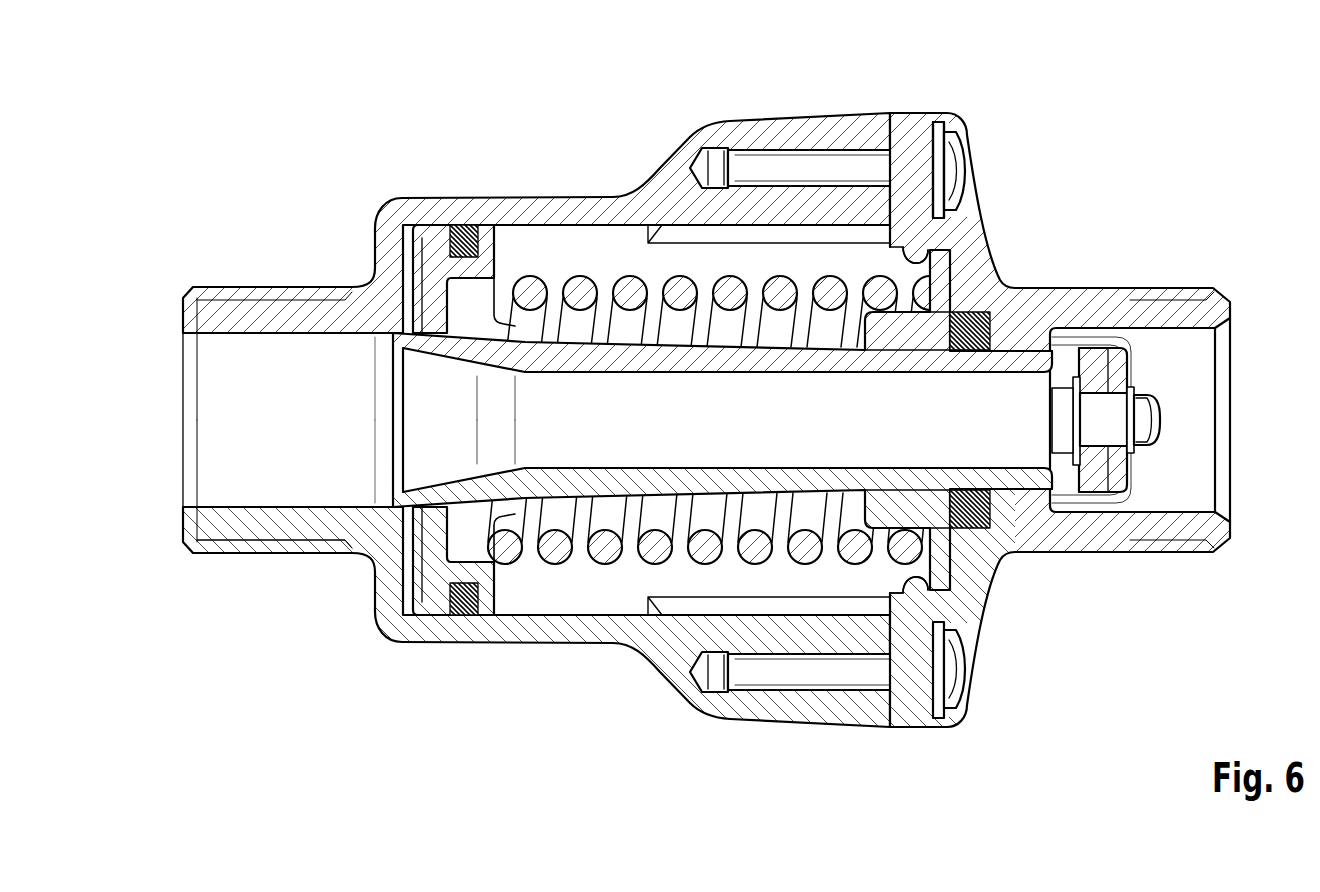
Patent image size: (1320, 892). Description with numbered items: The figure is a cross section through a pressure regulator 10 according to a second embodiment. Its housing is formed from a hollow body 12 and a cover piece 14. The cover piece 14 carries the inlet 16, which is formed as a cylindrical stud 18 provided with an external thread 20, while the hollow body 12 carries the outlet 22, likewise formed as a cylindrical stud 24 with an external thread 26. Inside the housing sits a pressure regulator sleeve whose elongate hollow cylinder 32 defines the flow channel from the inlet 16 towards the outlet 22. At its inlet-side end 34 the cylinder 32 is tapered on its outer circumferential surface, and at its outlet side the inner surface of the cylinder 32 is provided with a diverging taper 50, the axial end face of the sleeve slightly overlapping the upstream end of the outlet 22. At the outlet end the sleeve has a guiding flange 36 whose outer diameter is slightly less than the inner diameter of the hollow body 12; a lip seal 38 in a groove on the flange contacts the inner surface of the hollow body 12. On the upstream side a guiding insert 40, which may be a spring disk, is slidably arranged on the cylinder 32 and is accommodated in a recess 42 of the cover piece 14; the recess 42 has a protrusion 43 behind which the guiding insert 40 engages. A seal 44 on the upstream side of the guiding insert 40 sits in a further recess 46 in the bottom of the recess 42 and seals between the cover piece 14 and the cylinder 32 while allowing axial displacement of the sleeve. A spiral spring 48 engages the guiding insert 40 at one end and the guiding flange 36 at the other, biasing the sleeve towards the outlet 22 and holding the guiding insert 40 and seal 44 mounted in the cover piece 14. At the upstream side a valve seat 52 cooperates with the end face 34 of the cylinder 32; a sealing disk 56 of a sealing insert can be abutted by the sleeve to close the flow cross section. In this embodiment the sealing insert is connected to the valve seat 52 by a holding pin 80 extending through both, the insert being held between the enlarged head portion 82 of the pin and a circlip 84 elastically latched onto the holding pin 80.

The pressure regulator 10 is at (705, 420).
The hollow body 12 is at (543, 625).
The cover piece 14 is at (917, 712).
The inlet 16 is at (1190, 370).
The cylindrical stud 18 is at (1148, 527).
The external thread 20 is at (1200, 543).
The outlet 22 is at (222, 457).
The cylindrical stud 24 is at (251, 525).
The external thread 26 is at (290, 545).
The hollow cylinder 32 is at (672, 367).
The end of cylinder 34 is at (1036, 328).
The guiding flange 36 is at (428, 240).
The seal 38 is at (460, 240).
The guiding insert 40 is at (975, 245).
The recess 42 is at (975, 612).
The protrusion 43 is at (907, 247).
The seal 44 is at (968, 522).
The recess 46 is at (967, 320).
The spring 48 is at (580, 292).
The diverging taper 50 is at (443, 365).
The valve seat 52 is at (1115, 372).
The sealing disk 56 is at (1095, 463).
The holding pin 80 is at (1152, 413).
The enlarged head portion 82 is at (1063, 437).
The circlip 84 is at (1132, 440).